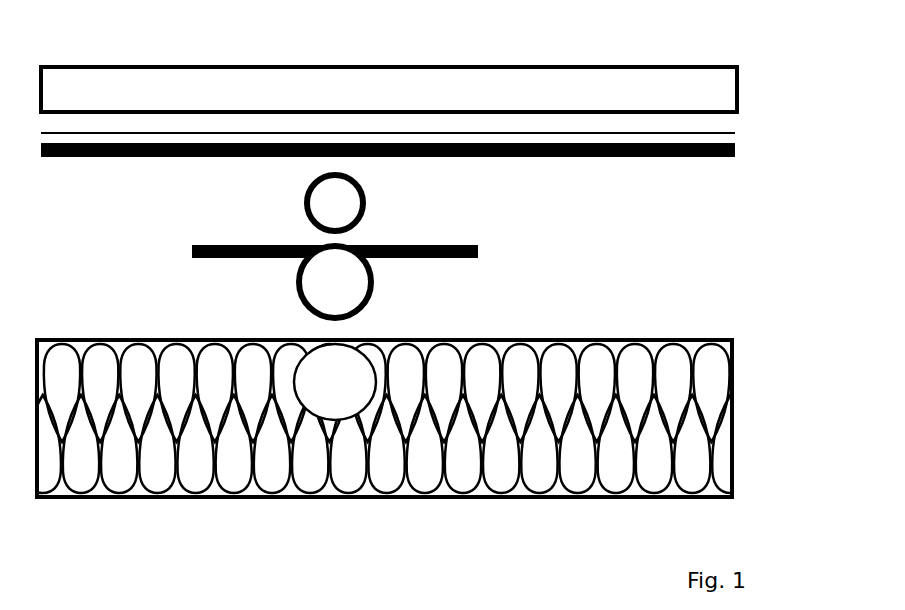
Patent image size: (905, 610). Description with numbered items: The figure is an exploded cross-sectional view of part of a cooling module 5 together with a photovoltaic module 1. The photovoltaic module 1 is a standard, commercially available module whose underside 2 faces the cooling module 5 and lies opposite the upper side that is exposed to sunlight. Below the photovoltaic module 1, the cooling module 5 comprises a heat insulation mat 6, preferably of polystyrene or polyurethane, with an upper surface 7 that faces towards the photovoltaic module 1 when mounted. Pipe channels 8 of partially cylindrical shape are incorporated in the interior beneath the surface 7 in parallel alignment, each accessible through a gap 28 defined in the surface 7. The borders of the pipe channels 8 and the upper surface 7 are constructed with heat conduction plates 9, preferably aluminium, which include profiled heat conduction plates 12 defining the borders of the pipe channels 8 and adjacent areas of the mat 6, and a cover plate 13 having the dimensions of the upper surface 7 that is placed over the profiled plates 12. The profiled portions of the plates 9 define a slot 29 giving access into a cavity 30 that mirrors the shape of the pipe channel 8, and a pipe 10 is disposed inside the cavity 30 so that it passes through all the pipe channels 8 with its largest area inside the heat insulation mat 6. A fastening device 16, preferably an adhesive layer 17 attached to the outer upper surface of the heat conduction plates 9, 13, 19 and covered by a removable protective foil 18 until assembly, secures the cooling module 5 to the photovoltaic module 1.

The photovoltaic module 1 is at (630, 104).
The underside 2 is at (566, 118).
The cooling module 5 is at (429, 316).
The heat insulation mat 6 is at (429, 316).
The upper surface 7 is at (487, 329).
The pipe channel 8 is at (330, 391).
The heat conduction plate 9 is at (445, 222).
The pipe 10 is at (327, 212).
The profiled heat conduction plate 12 is at (335, 228).
The cover plate 13 is at (388, 176).
The fastening device 16 is at (388, 176).
The adhesive layer 17 is at (118, 137).
The protective foil 18 is at (44, 131).
The absorber layer 19 is at (388, 176).
The gap 28 is at (353, 341).
The slot 29 is at (346, 247).
The cavity 30 is at (312, 291).